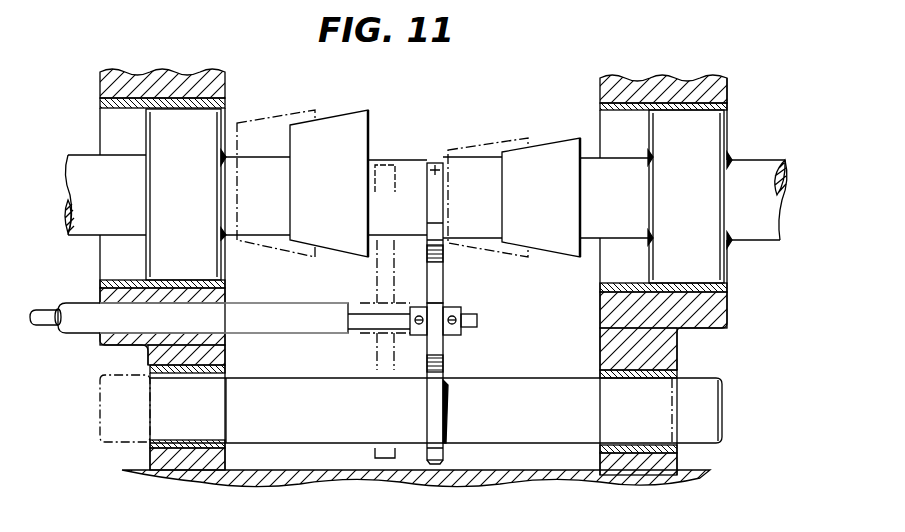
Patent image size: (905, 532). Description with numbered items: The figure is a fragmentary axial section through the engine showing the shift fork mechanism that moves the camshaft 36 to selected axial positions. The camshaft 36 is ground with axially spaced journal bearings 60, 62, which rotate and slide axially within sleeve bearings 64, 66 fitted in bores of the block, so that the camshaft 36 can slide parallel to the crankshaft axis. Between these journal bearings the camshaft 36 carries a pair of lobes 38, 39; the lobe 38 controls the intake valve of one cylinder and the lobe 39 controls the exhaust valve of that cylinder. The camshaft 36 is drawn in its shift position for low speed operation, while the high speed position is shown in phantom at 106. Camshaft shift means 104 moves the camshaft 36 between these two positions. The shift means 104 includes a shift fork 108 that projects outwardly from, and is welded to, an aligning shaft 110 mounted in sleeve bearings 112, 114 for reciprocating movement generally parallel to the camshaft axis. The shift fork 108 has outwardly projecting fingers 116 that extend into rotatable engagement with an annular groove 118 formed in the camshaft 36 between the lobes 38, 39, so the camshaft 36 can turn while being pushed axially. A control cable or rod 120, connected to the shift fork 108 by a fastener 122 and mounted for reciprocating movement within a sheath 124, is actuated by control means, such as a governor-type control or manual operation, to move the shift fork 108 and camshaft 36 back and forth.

The camshaft 36 is at (787, 163).
The lobe 38 is at (547, 150).
The lobe 39 is at (366, 92).
The journal bearing 60 is at (210, 116).
The journal bearing 62 is at (715, 127).
The sleeve bearing 64 is at (118, 108).
The sleeve bearing 66 is at (603, 110).
The camshaft shift means 104 is at (90, 335).
The high speed position 106 is at (283, 112).
The shift fork 108 is at (438, 296).
The aligning shaft 110 is at (518, 378).
The sleeve bearing 112 is at (213, 437).
The sleeve bearing 114 is at (610, 445).
The fingers 116 is at (438, 163).
The annular groove 118 is at (434, 163).
The control cable or rod 120 is at (45, 310).
The fastener 122 is at (452, 336).
The sheath 124 is at (287, 310).